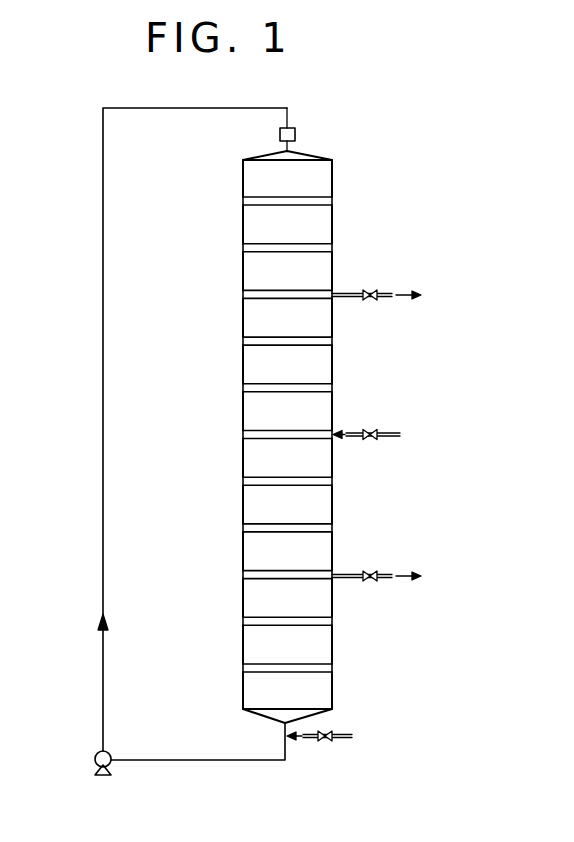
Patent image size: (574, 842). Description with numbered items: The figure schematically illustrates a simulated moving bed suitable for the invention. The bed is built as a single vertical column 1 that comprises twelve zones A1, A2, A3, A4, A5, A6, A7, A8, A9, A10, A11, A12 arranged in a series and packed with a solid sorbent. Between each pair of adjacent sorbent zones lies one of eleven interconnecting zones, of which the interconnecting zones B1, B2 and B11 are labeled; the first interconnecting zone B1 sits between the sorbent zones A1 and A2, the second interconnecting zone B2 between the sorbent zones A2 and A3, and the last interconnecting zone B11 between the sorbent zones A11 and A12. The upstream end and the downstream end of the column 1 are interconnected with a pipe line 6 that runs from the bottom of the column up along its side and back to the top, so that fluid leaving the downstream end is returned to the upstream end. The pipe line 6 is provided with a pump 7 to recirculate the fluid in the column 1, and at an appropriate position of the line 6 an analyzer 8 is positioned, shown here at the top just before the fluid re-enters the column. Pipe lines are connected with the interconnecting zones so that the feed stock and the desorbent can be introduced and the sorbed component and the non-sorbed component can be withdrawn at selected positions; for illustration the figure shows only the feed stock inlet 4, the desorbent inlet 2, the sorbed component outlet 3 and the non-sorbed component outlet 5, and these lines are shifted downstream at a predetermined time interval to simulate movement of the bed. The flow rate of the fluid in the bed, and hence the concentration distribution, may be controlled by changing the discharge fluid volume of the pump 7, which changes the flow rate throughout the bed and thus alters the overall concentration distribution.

The column 1 is at (242, 411).
The desorbent inlet 2 is at (320, 733).
The sorbed component outlet 3 is at (385, 300).
The feed stock inlet 4 is at (378, 430).
The non-sorbed component outlet 5 is at (368, 570).
The pipe line 6 is at (175, 761).
The pump 7 is at (94, 761).
The analyzer 8 is at (295, 134).
The sorbent zone A1 is at (287, 178).
The sorbent zone A2 is at (287, 224).
The sorbent zone A3 is at (287, 271).
The sorbent zone A4 is at (287, 317).
The sorbent zone A5 is at (287, 364).
The sorbent zone A6 is at (287, 411).
The sorbent zone A7 is at (287, 458).
The sorbent zone A8 is at (287, 504).
The sorbent zone A9 is at (287, 551).
The sorbent zone A10 is at (287, 598).
The sorbent zone A11 is at (287, 644).
The sorbent zone A12 is at (287, 690).
The interconnecting zone B1 is at (332, 201).
The interconnecting zone B2 is at (332, 247).
The interconnecting zone B11 is at (332, 668).